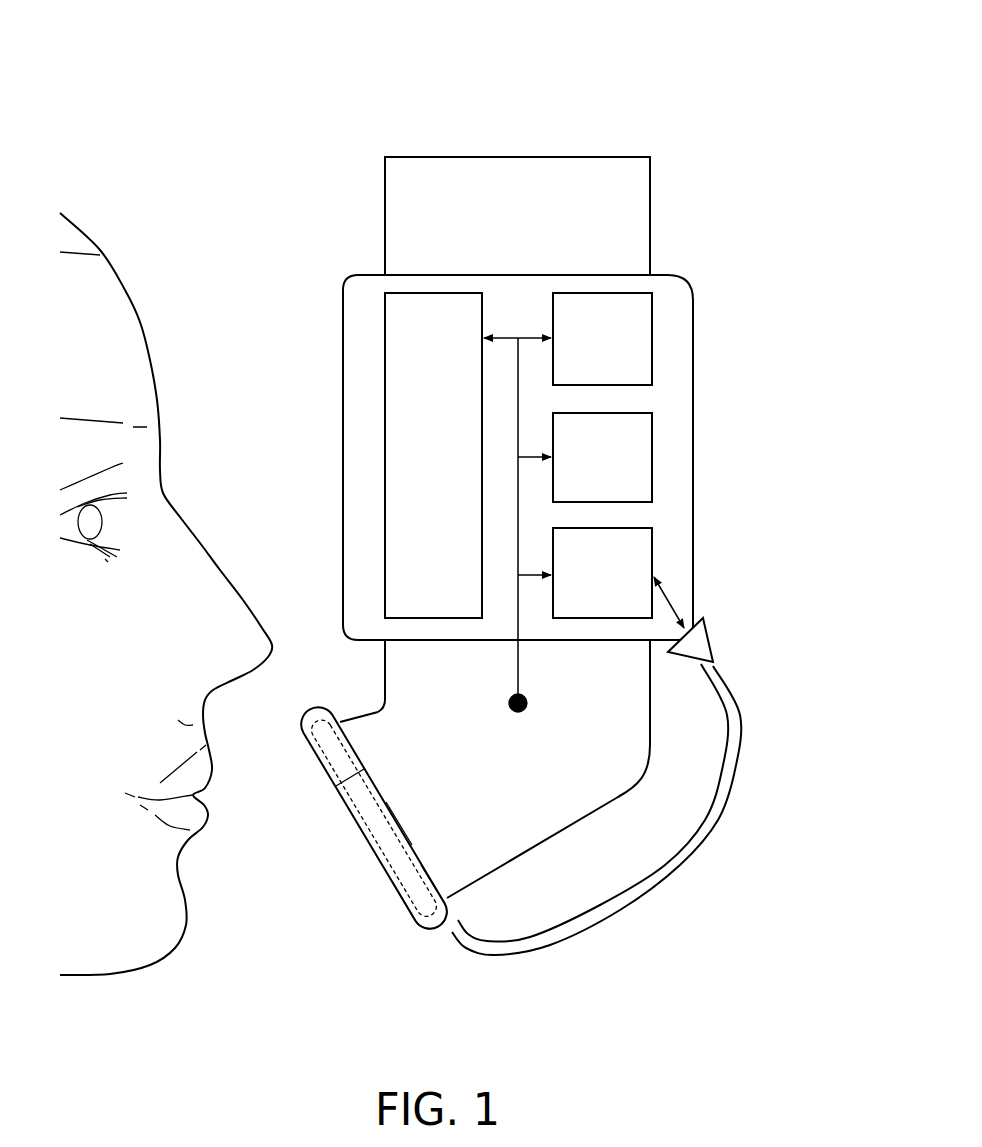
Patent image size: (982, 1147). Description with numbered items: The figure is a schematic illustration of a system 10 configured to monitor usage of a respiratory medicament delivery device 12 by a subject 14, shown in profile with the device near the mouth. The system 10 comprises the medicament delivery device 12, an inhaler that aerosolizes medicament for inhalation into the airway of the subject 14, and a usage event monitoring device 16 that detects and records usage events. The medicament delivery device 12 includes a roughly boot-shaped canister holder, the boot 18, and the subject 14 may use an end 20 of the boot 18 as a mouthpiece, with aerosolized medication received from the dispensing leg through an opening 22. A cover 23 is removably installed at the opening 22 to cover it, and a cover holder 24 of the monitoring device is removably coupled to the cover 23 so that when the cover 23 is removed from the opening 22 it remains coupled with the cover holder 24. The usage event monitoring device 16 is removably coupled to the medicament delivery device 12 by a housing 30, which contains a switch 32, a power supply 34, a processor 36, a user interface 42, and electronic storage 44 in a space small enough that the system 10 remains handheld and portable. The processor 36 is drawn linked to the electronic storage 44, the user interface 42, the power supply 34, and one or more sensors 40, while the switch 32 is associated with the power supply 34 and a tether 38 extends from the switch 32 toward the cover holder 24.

The system 10 is at (272, 205).
The medicament delivery device 12 is at (570, 142).
The subject 14 is at (136, 325).
The usage event monitoring device 16 is at (541, 447).
The boot 18 is at (652, 690).
The end 20 is at (358, 710).
The opening 22 is at (399, 821).
The cover 23 is at (330, 783).
The cover holder 24 is at (403, 905).
The housing 30 is at (343, 418).
The switch 32 is at (726, 619).
The power supply 34 is at (614, 612).
The processor 36 is at (445, 365).
The tether 38 is at (647, 888).
The sensors 40 is at (527, 703).
The user interface 42 is at (614, 493).
The electronic storage 44 is at (614, 375).